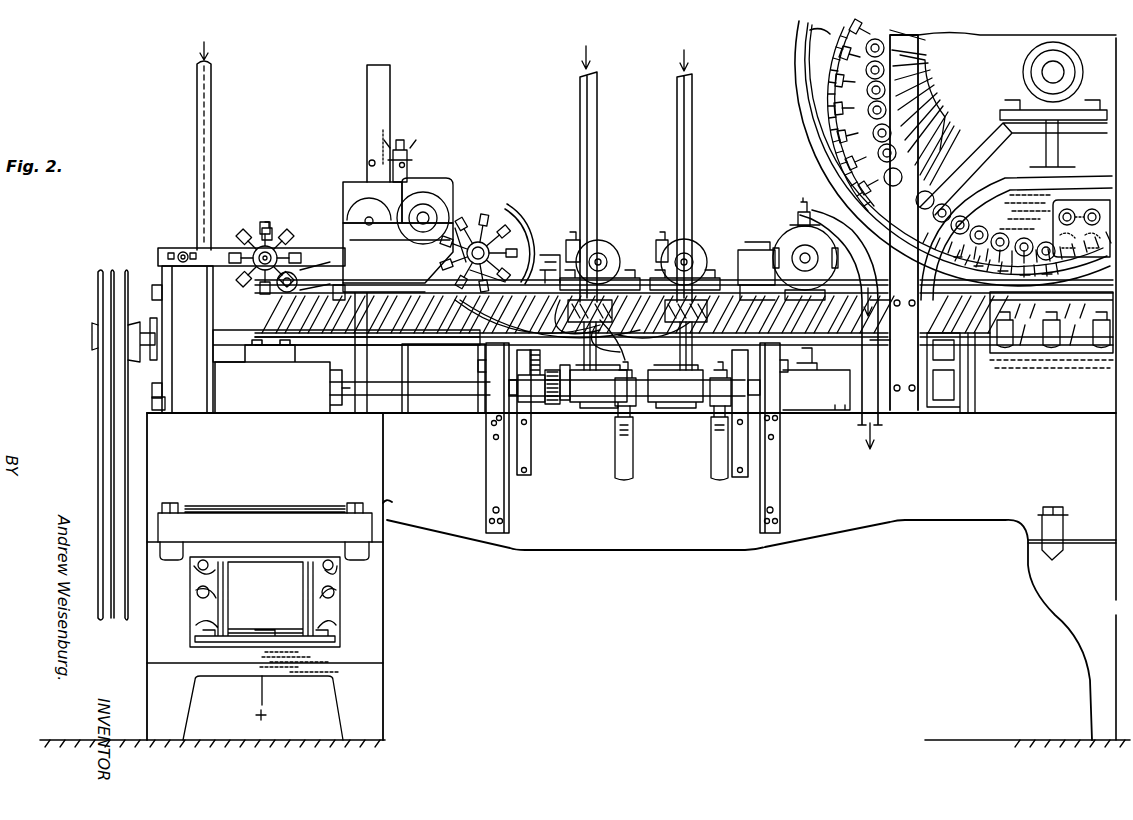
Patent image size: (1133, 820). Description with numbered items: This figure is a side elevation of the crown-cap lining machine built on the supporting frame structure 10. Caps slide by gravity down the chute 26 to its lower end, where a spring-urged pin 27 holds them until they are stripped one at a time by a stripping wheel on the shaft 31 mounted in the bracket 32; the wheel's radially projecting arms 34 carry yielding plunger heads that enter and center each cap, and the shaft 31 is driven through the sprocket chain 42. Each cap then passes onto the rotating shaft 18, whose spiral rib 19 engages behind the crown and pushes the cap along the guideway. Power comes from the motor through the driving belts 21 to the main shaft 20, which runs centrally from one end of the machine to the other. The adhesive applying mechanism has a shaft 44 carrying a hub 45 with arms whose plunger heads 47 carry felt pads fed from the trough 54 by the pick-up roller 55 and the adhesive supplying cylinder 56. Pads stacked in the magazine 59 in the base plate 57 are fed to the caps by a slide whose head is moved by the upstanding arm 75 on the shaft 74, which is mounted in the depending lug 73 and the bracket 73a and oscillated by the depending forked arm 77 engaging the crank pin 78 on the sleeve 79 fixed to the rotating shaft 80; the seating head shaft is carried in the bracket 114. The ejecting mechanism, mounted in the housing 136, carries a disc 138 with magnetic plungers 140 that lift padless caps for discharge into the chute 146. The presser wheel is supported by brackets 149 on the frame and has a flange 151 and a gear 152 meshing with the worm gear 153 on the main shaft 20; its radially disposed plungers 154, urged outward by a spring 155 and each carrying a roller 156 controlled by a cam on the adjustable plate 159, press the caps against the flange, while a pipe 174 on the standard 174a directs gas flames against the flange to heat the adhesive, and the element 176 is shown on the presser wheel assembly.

The supporting frame structure 10 is at (570, 538).
The rotating shaft 18 is at (338, 288).
The spiral rib 19 is at (328, 300).
The main shaft 20 is at (432, 342).
The driving belts 21 is at (100, 456).
The chute 26 is at (210, 182).
The pin 27 is at (663, 321).
The shaft 31 is at (254, 259).
The bracket 32 is at (217, 248).
The radially projecting arms 34 is at (267, 226).
The sprocket chain 42 is at (298, 276).
The shaft 44 is at (489, 228).
The hub 45 is at (516, 241).
The plunger heads 47 is at (470, 225).
The trough 54 is at (383, 265).
The pick-up roller 55 is at (360, 200).
The adhesive supplying roll or cylinder 56 is at (443, 195).
The base plate 57 is at (612, 276).
The magazine 59 is at (598, 146).
The depending lug 73 is at (650, 421).
The bracket 73a is at (490, 396).
The shaft 74 is at (552, 395).
The upstanding arm 75 is at (600, 346).
The depending forked arm 77 is at (488, 378).
The crank pin 78 is at (528, 404).
The sleeve 79 is at (550, 404).
The shaft 80 is at (606, 397).
The bracket 114 is at (598, 248).
The housing 136 is at (790, 232).
The disc 138 is at (802, 210).
The plunger 140 is at (810, 232).
The discharge chute 146 is at (1047, 70).
The brackets 149 is at (1077, 166).
The flange 151 is at (814, 107).
The gear 152 is at (828, 130).
The worm gear 153 is at (1022, 366).
The radially disposed plungers 154 is at (862, 165).
The spring 155 is at (958, 120).
The roller 156 is at (880, 92).
The plate 159 is at (1077, 205).
The pipe 174 is at (812, 32).
The standard 174a is at (838, 150).
The cover 176 is at (958, 196).